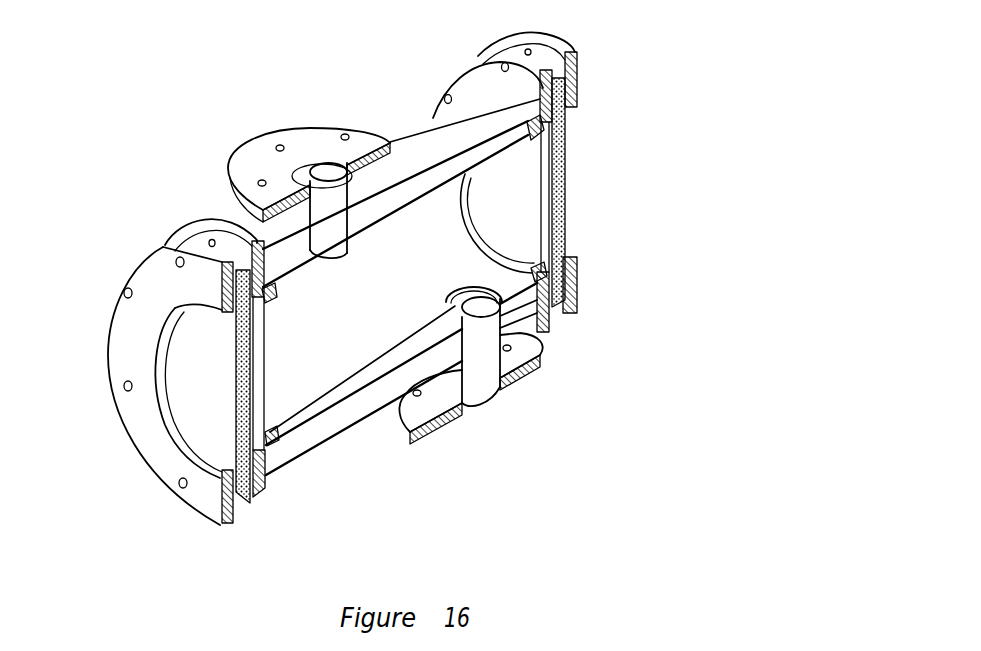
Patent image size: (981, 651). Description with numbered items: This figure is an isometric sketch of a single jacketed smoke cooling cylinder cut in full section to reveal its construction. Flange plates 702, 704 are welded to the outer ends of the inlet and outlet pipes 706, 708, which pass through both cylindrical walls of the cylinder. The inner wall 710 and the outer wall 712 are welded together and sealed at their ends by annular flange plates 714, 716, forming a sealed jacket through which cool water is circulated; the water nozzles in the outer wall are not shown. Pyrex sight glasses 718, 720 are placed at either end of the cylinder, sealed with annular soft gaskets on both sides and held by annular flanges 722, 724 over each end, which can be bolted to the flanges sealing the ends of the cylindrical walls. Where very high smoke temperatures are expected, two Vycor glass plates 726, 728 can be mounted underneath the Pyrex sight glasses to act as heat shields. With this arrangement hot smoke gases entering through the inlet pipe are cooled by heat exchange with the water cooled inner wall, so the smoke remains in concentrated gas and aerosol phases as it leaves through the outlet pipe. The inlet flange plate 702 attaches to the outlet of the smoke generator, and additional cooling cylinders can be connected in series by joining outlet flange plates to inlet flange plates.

The flange plate 702 is at (252, 162).
The flange plate 704 is at (527, 370).
The inlet pipe 706 is at (485, 370).
The outlet pipe 708 is at (320, 170).
The inner cylindrical wall 710 is at (333, 408).
The outer cylindrical wall 712 is at (375, 410).
The annular flange plate 714 is at (257, 503).
The annular flange plate 716 is at (550, 322).
The Pyrex sight glass 718 is at (234, 367).
The Pyrex sight glass 720 is at (562, 142).
The annular flange 722 is at (123, 318).
The annular flange 724 is at (576, 75).
The Vycor glass plate 726 is at (255, 413).
The Vycor glass plate 728 is at (548, 193).